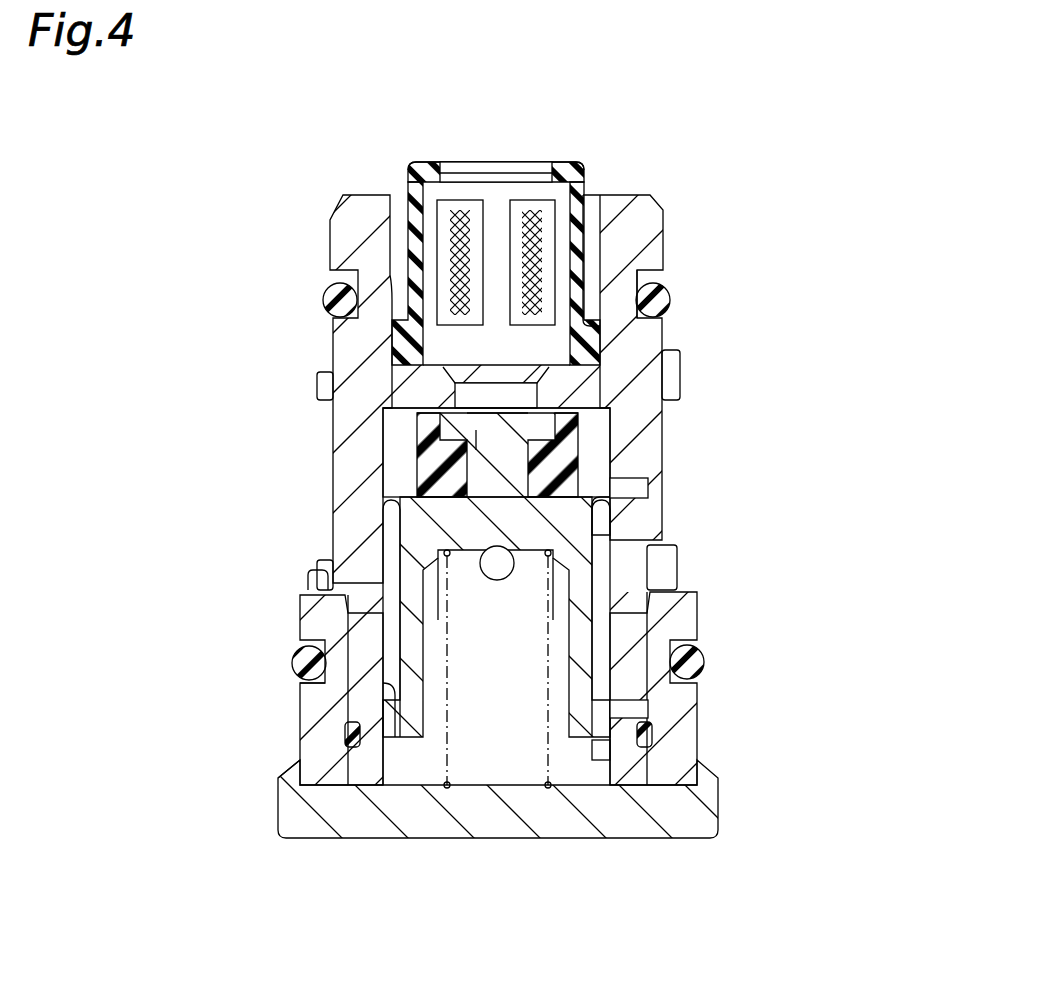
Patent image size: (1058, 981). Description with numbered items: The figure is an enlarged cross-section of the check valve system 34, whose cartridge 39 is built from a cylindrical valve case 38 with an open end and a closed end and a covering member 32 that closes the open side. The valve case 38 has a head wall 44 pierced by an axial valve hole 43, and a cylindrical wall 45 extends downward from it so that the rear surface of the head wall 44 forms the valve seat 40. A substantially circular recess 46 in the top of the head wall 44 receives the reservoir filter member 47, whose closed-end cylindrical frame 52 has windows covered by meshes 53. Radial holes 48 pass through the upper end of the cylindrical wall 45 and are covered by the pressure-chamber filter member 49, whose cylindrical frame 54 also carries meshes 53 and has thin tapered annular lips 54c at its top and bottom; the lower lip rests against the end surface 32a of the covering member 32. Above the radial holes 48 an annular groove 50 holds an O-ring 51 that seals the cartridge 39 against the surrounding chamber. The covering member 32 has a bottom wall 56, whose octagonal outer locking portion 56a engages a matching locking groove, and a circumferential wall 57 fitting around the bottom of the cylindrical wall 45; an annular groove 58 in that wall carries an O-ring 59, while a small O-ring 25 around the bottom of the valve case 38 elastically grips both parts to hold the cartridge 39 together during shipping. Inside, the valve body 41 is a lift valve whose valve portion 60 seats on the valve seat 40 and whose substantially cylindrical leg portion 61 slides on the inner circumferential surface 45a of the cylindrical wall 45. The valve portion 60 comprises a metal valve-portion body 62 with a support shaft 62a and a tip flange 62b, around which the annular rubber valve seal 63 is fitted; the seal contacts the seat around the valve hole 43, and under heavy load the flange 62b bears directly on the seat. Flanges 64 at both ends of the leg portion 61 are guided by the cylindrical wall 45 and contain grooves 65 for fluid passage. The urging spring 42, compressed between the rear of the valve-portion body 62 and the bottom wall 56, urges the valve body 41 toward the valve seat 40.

The O-ring 25 is at (345, 748).
The covering member 32 is at (690, 605).
The end surface of the covering member 32a is at (692, 622).
The check valve system 34 is at (686, 198).
The valve case 38 is at (664, 530).
The cartridge 39 is at (866, 470).
The valve seat 40 is at (385, 428).
The valve body 41 is at (237, 480).
The urging spring 42 is at (447, 788).
The valve hole 43 is at (548, 386).
The head wall 44 is at (335, 232).
The cylindrical wall 45 is at (355, 622).
The inner circumferential surface 45a is at (393, 688).
The recess 46 is at (398, 218).
The reservoir filter member 47 is at (590, 164).
The radial holes 48 is at (412, 478).
The pressure-chamber filter member 49 is at (684, 395).
The annular groove 50 is at (656, 284).
The O-ring 51 is at (662, 303).
The cylindrical frame 52 is at (586, 206).
The meshes 53 is at (533, 212).
The cylindrical frame 54 is at (682, 378).
The annular lips 54c is at (668, 352).
The bottom wall 56 is at (497, 805).
The octagonal locking portion 56a is at (278, 820).
The circumferential wall 57 is at (320, 640).
The annular groove 58 is at (300, 663).
The O-ring 59 is at (332, 678).
The valve portion 60 is at (414, 490).
The leg portion 61 is at (396, 582).
The valve-portion body 62 is at (200, 283).
The support shaft 62a is at (476, 437).
The flange 62b is at (530, 412).
The valve seal 63 is at (414, 485).
The flanges 64 is at (612, 512).
The grooves 65 is at (606, 525).